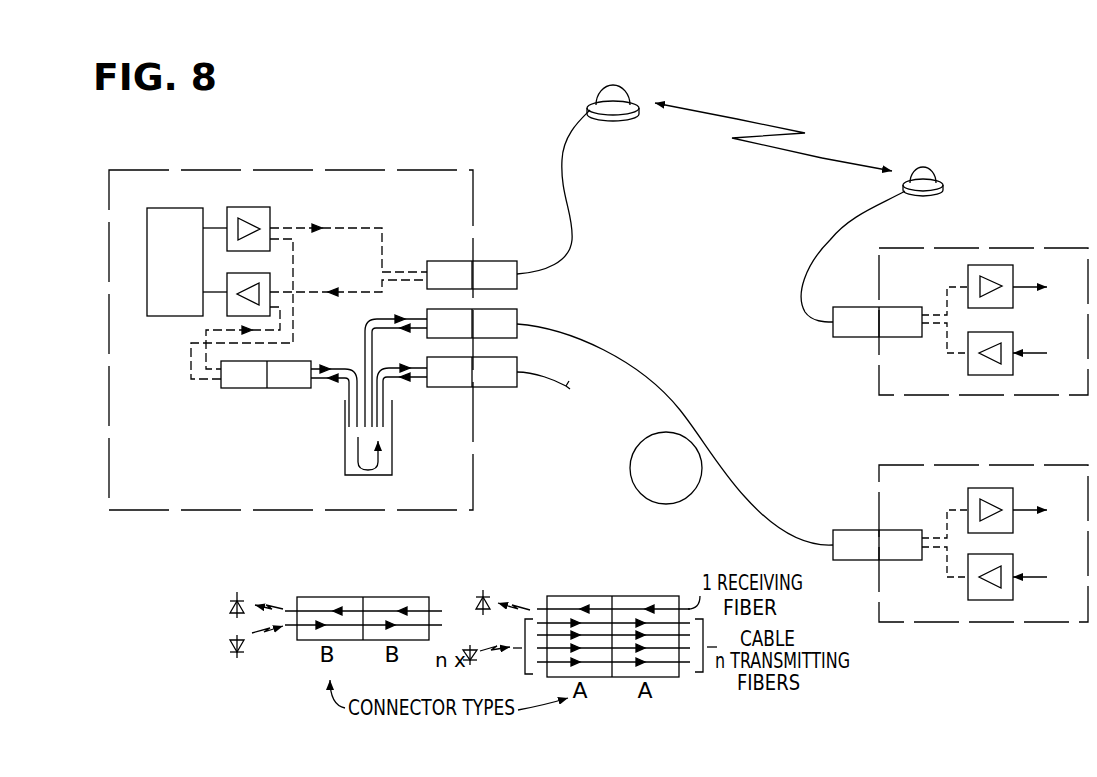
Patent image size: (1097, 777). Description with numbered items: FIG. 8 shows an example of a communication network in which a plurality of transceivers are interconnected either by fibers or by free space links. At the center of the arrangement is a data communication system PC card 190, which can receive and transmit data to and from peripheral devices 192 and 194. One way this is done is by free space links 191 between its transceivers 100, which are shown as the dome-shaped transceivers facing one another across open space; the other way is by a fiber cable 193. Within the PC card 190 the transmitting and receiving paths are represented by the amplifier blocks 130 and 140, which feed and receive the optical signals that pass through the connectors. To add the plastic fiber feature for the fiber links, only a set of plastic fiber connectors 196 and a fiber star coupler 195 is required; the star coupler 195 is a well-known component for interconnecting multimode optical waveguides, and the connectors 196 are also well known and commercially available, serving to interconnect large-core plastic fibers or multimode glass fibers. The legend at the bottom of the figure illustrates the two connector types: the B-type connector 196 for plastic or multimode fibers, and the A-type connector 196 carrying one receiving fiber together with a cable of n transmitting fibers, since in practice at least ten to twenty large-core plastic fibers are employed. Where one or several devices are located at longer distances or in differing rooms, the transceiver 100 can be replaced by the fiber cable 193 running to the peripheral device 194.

The transceiver 100 is at (598, 96).
The transmitter amplifier 130 is at (258, 207).
The receiver amplifier 140 is at (262, 273).
The data communication system PC card 190 is at (363, 168).
The free space link 191 is at (783, 128).
The peripheral device 192 is at (1030, 245).
The fiber cable 193 is at (667, 392).
The peripheral device 194 is at (1032, 462).
The fiber star coupler 195 is at (345, 453).
The plastic fiber connector 196 is at (257, 389).